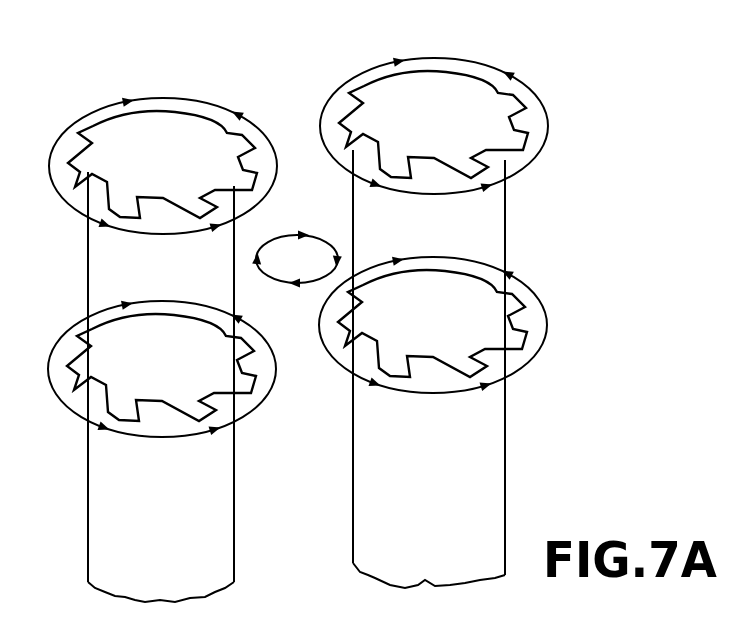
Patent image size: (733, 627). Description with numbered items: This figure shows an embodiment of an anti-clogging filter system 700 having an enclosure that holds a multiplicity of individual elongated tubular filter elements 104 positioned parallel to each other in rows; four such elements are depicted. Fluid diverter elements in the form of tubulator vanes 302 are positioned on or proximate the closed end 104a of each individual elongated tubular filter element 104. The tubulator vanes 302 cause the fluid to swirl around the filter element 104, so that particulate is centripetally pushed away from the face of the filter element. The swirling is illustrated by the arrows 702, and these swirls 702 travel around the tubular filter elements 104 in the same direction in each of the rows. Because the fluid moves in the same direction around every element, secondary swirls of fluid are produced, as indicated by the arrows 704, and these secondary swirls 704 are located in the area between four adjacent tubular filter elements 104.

The anti-clogging filter system 700 is at (590, 72).
The elongated tubular filter element 104 is at (190, 278).
The closed end 104a is at (200, 171).
The tubulator vanes 302 is at (90, 177).
The arrows (swirls of fluid) 702 is at (343, 93).
The arrows (secondary swirls of fluid) 704 is at (292, 234).